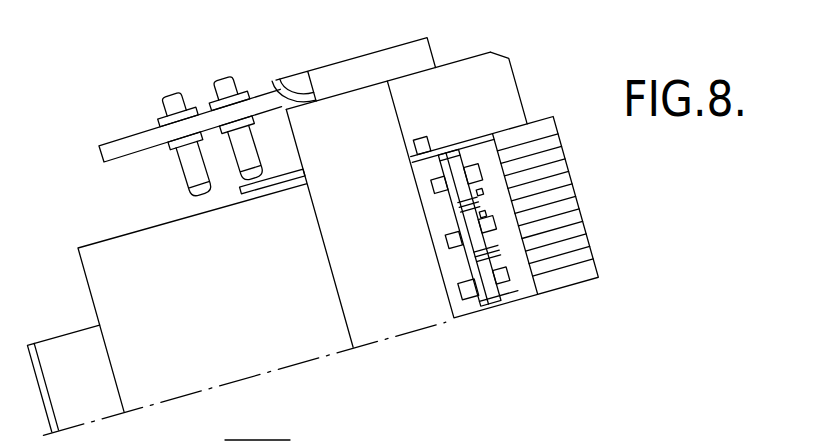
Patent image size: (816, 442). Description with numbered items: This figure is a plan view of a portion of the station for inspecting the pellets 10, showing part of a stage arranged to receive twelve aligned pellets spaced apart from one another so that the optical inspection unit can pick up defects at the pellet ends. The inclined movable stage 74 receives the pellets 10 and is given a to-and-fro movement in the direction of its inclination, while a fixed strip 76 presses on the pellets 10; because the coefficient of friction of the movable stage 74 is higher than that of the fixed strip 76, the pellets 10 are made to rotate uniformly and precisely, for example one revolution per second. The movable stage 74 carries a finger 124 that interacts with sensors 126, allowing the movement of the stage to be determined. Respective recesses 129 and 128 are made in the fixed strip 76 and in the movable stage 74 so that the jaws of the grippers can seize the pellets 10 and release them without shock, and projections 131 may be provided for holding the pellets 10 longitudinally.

The pellets 10 is at (460, 175).
The inclined stage 74 is at (558, 203).
The fixed strip 76 is at (443, 221).
The finger 124 is at (277, 189).
The sensors 126 is at (247, 153).
The recess 128 is at (508, 295).
The recess 129 is at (470, 289).
The projections 131 is at (452, 158).